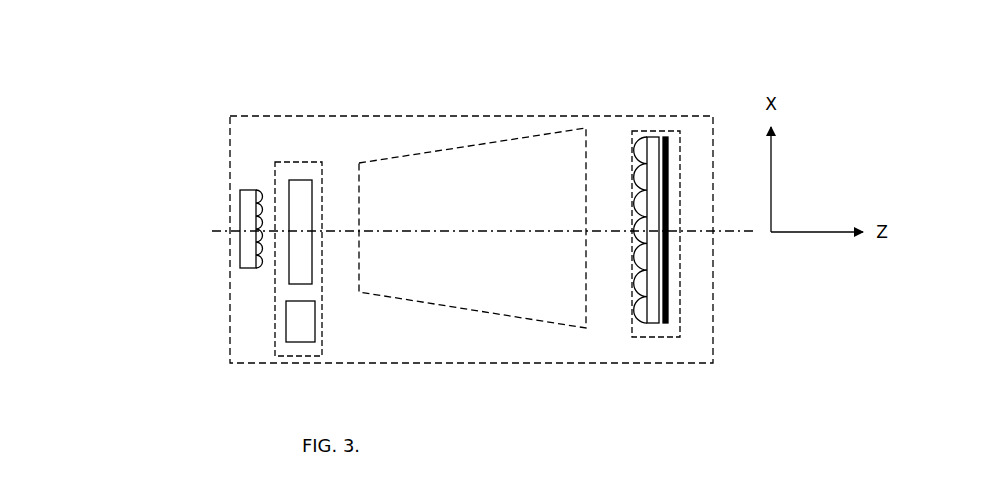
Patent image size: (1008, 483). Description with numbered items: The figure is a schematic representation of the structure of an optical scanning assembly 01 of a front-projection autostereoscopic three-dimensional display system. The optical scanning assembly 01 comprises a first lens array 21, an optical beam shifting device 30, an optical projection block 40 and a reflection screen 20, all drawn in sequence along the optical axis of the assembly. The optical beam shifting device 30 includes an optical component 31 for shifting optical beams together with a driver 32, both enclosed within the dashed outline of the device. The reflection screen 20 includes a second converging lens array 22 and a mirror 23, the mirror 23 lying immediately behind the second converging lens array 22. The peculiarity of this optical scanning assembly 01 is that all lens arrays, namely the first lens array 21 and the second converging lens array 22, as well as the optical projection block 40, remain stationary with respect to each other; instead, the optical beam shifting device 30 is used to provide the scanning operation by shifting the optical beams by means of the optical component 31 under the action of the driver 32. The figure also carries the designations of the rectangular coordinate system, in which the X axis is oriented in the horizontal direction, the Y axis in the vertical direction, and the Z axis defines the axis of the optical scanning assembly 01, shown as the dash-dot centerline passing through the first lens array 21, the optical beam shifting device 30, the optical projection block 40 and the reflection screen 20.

The optical scanning assembly 01 is at (213, 292).
The reflection screen 20 is at (680, 327).
The first lens array 21 is at (239, 210).
The second converging lens array 22 is at (650, 137).
The mirror 23 is at (668, 138).
The optical beam shifting device 30 is at (293, 163).
The optical component for shifting optical beams 31 is at (305, 182).
The driver 32 is at (315, 325).
The optical projection block 40 is at (483, 143).